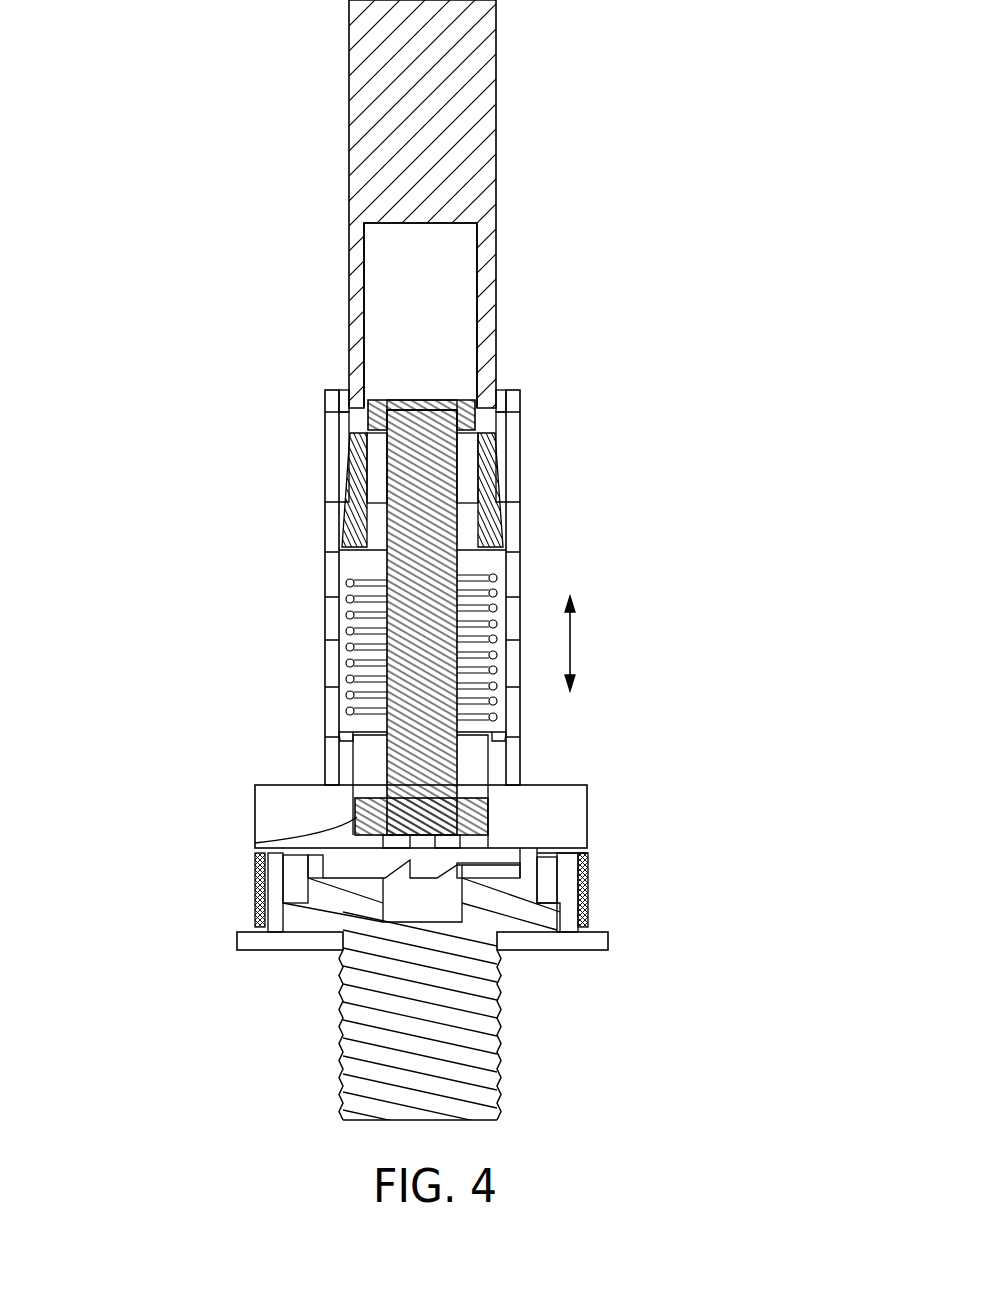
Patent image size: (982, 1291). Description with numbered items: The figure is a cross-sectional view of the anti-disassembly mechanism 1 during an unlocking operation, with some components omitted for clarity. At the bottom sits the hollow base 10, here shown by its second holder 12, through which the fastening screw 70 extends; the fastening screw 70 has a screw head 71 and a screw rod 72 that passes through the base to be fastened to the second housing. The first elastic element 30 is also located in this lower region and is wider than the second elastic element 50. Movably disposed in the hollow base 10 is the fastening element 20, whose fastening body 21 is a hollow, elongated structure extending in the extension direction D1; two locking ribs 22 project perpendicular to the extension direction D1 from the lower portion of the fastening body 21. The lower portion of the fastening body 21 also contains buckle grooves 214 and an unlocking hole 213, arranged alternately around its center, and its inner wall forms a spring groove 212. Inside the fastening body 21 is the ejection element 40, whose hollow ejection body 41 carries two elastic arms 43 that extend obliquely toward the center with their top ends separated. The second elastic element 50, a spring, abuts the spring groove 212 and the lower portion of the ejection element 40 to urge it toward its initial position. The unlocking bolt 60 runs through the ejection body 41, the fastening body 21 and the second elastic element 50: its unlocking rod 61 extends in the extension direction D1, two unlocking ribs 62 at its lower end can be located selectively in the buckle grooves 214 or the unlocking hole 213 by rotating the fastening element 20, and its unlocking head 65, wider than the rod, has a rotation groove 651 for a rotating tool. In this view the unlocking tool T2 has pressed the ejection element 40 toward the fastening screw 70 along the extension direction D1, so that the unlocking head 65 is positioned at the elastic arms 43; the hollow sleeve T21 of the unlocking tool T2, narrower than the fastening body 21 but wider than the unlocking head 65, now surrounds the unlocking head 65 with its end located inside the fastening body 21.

The anti-disassembly mechanism 1 is at (702, 417).
The unlocking tool T2 is at (498, 102).
The sleeve T21 is at (494, 290).
The fastening element 20 is at (545, 555).
The fastening body 21 is at (332, 606).
The spring groove 212 is at (512, 742).
The locking ribs 22 is at (272, 810).
The buckle grooves 214 is at (255, 843).
The ejection element 40 is at (348, 450).
The elastic arms 43 is at (355, 487).
The ejection body 41 is at (505, 520).
The unlocking bolt 60 is at (385, 565).
The unlocking head 65 is at (358, 398).
The rotation groove 651 is at (420, 402).
The unlocking rod 61 is at (457, 765).
The unlocking ribs 62 is at (490, 822).
The second elastic element 50 is at (357, 680).
The extension direction D1 is at (596, 643).
The first elastic element 30 is at (589, 915).
The unlocking hole 213 is at (422, 853).
The second holder 12 is at (332, 923).
The hollow base 10 is at (421, 890).
The fastening screw 70 is at (552, 1036).
The screw head 71 is at (302, 915).
The screw rod 72 is at (390, 1083).